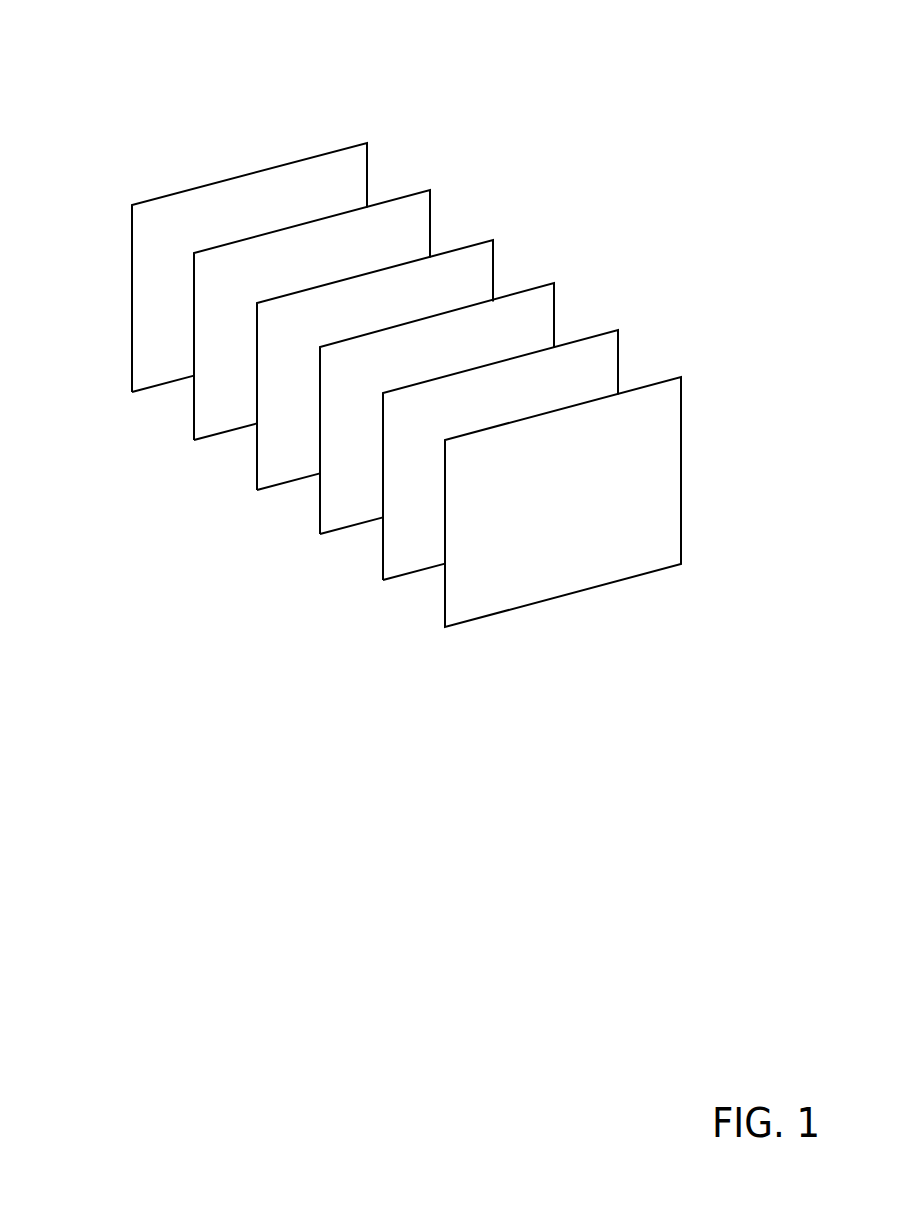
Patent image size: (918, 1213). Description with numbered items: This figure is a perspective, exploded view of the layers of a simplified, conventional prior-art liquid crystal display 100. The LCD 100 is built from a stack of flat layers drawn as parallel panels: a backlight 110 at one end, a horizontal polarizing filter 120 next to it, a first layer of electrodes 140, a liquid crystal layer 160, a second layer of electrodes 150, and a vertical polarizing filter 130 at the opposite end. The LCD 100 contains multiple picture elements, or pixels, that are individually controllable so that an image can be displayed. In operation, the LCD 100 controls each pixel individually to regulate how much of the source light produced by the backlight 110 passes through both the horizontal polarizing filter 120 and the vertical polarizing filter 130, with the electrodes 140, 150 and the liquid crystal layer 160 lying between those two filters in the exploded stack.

The liquid crystal display 100 is at (649, 60).
The backlight 110 is at (341, 149).
The horizontal polarizing filter 120 is at (194, 418).
The vertical polarizing filter 130 is at (445, 601).
The layer of electrodes 140 is at (472, 246).
The layer of electrodes 150 is at (600, 336).
The liquid crystal layer 160 is at (320, 493).